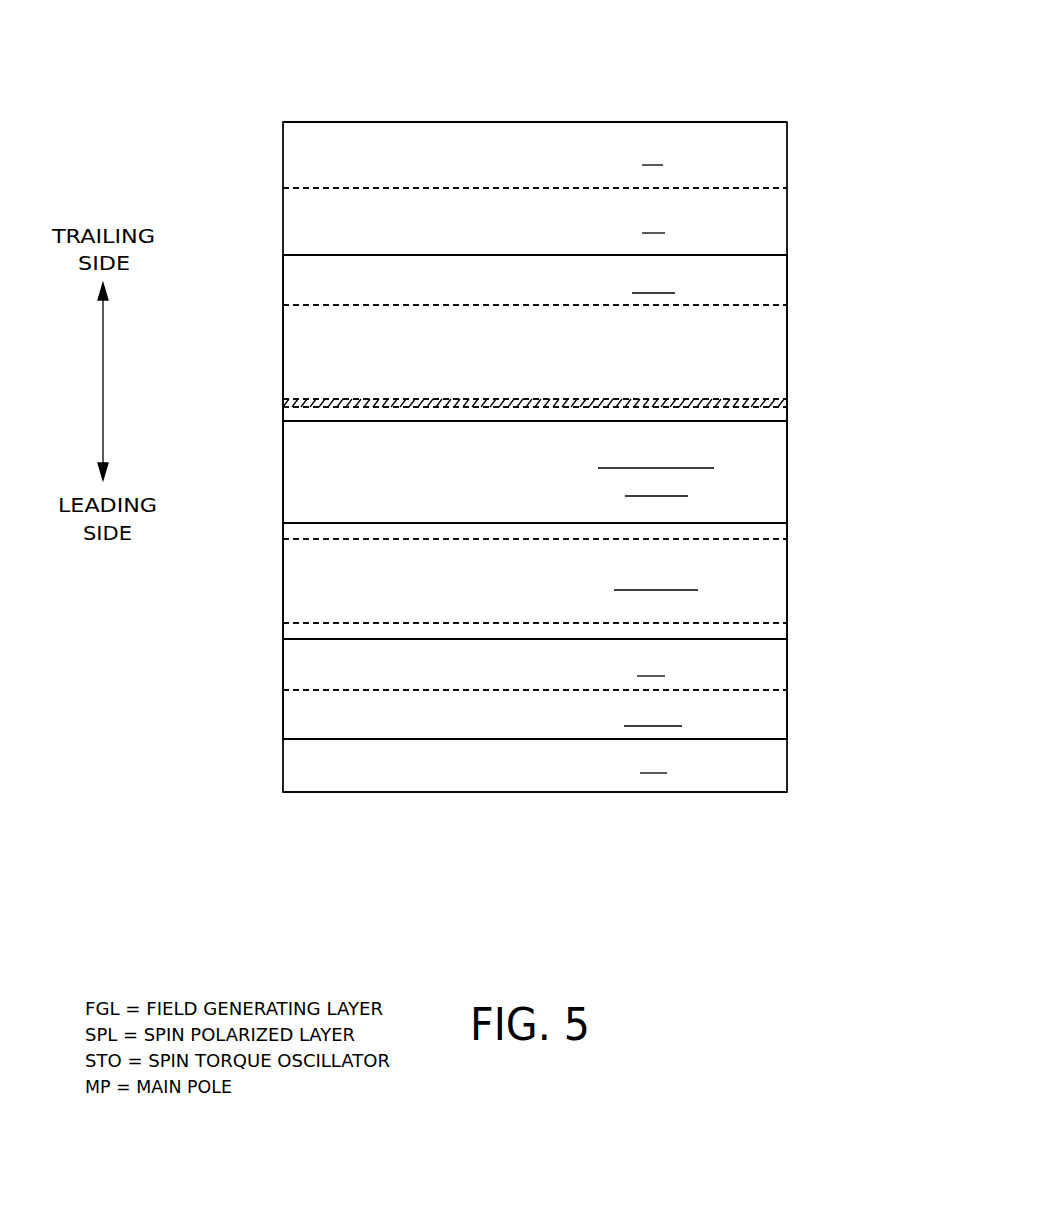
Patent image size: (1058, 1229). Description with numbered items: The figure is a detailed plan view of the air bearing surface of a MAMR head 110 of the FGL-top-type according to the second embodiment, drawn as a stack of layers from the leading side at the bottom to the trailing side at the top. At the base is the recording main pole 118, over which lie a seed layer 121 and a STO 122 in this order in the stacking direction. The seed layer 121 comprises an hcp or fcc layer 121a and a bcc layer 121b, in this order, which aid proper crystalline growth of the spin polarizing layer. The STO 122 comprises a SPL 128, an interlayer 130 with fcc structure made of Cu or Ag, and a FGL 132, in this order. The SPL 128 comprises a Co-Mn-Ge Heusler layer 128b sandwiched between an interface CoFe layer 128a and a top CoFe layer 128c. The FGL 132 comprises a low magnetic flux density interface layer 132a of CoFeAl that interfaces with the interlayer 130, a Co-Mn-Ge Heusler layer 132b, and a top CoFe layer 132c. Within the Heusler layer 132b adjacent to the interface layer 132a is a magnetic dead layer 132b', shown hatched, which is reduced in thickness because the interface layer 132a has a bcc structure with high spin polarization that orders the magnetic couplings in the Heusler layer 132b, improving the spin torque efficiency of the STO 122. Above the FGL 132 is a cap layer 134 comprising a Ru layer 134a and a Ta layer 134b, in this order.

The MAMR head 110 is at (285, 40).
The cap layer 134 is at (275, 121).
The Ta layer 134b is at (554, 165).
The Ru layer 134a is at (554, 233).
The field generating layer (FGL) 132 is at (275, 257).
The top CoFe layer 132c is at (554, 293).
The Heusler layer 132b is at (602, 355).
The magnetic dead layer 132b' is at (482, 435).
The low magnetic flux density interface (LMFDI) layer 132a is at (765, 417).
The interlayer 130 is at (550, 481).
The spin polarizing layer (SPL) 128 is at (275, 523).
The top CoFe layer 128c is at (777, 531).
The Heusler layer 128b is at (554, 590).
The interface CoFe layer 128a is at (778, 635).
The spin torque oscillator (STO) 122 is at (798, 563).
The seed layer 121 is at (275, 639).
The bcc layer 121b is at (554, 676).
The hcp or fcc layer 121a is at (554, 726).
The main pole 118 is at (550, 773).